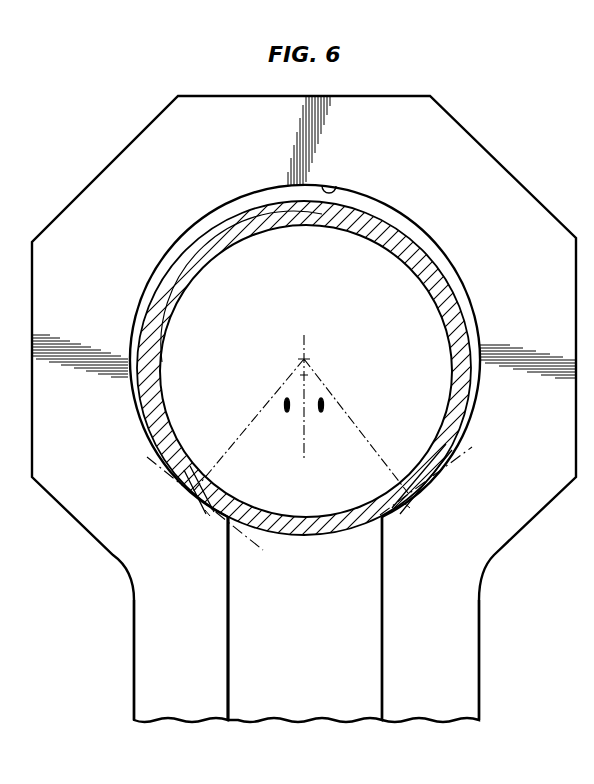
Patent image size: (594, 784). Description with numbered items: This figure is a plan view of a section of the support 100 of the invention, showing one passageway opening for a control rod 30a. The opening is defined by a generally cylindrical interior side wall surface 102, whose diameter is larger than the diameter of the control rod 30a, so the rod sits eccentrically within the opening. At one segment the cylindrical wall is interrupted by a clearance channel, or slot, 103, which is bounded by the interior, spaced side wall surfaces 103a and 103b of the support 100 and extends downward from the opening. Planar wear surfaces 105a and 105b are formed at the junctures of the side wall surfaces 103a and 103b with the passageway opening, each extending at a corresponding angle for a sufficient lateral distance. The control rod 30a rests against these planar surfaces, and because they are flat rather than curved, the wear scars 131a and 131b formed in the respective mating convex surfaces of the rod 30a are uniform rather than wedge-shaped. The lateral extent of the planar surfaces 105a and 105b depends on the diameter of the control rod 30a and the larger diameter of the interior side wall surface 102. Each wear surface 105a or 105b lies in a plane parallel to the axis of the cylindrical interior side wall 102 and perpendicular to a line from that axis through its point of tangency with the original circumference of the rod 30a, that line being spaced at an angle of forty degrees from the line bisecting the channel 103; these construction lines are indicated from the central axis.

The support 100 is at (118, 153).
The generally cylindrical interior side wall surface 102 is at (336, 185).
The control rod 30a is at (168, 322).
The wear scar 131a is at (200, 478).
The wear scar 131b is at (418, 487).
The planar wear surface 105a is at (207, 515).
The planar wear surface 105b is at (407, 503).
The interior side wall surface 103a is at (229, 600).
The interior side wall surface 103b is at (382, 608).
The clearance channel 103 is at (336, 696).